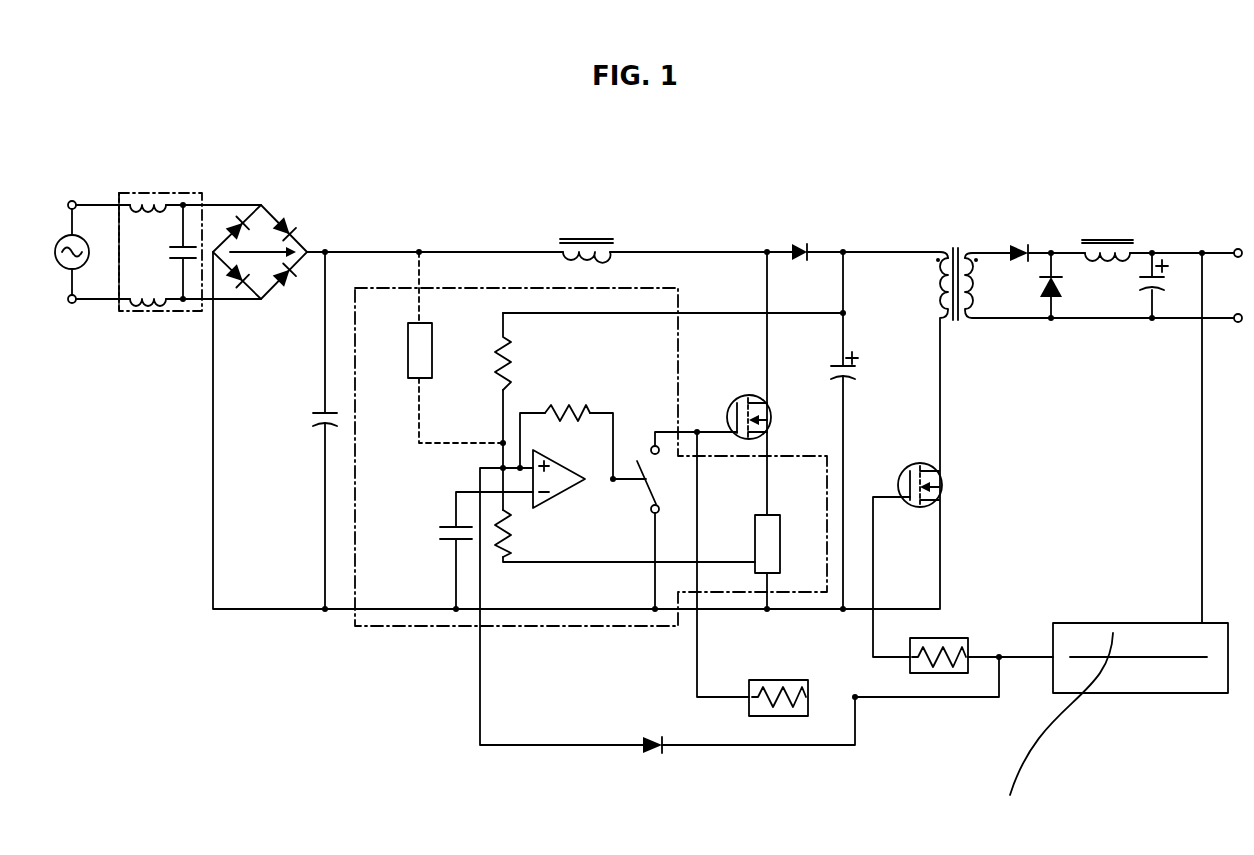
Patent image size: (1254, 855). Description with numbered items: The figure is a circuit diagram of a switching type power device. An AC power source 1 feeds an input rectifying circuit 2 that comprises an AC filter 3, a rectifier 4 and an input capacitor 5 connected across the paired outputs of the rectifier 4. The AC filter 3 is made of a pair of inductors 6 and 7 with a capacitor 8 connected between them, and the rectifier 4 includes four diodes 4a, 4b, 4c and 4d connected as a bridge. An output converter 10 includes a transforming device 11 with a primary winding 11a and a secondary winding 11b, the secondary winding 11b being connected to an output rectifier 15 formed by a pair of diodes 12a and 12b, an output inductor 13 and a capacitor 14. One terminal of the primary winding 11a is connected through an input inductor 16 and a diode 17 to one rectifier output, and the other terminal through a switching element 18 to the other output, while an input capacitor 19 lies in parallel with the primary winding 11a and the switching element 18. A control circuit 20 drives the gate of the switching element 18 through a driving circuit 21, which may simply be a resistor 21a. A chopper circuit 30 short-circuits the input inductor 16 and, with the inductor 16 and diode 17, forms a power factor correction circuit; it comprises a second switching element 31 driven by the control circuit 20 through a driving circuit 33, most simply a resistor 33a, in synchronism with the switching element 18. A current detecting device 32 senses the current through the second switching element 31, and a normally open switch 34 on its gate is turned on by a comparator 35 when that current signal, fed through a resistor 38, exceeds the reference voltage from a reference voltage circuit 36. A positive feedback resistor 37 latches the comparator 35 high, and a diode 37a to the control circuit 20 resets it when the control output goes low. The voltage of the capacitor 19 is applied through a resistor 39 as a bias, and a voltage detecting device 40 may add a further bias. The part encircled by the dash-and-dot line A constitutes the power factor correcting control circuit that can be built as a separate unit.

The AC power source 1 is at (55, 252).
The input rectifying circuit 2 is at (203, 183).
The AC filter 3 is at (129, 192).
The rectifier 4 is at (284, 249).
The diode 4a is at (237, 227).
The diode 4b is at (233, 287).
The diode 4c is at (290, 232).
The diode 4d is at (293, 287).
The input capacitor 5 is at (322, 412).
The inductor 6 is at (152, 200).
The inductor 7 is at (140, 303).
The capacitor 8 is at (172, 246).
The output converter 10 is at (957, 301).
The transforming device 11 is at (957, 332).
The primary winding 11a is at (935, 286).
The secondary winding 11b is at (985, 288).
The diode 12a is at (1018, 240).
The diode 12b is at (1062, 292).
The output inductor 13 is at (1123, 240).
The capacitor 14 is at (1158, 290).
The output rectifier 15 is at (1140, 277).
The input inductor 16 is at (588, 238).
The diode 17 is at (793, 243).
The switching element 18 is at (897, 480).
The input capacitor 19 is at (846, 378).
The control circuit 20 is at (1152, 697).
The driving circuit 21 is at (957, 638).
The resistor 21a is at (928, 660).
The chopper circuit 30 is at (762, 315).
The second switching element 31 is at (776, 420).
The current detecting device 32 is at (773, 543).
The driving circuit 33 is at (748, 687).
The resistor 33a is at (782, 687).
The normally open switch 34 is at (657, 493).
The comparator 35 is at (563, 486).
The reference voltage circuit 36 is at (450, 547).
The positive feedback resistor 37 is at (550, 400).
The diode 37a is at (648, 757).
The resistor 38 is at (507, 533).
The resistor 39 is at (492, 358).
The voltage detecting device 40 is at (407, 352).
The dash-and-dot line A is at (378, 628).